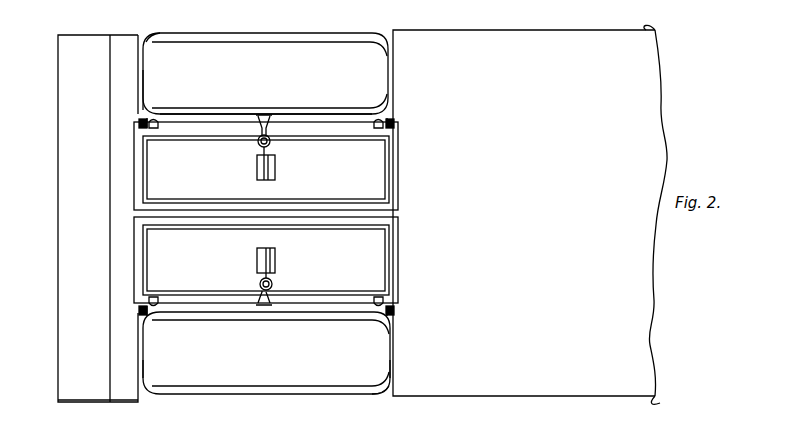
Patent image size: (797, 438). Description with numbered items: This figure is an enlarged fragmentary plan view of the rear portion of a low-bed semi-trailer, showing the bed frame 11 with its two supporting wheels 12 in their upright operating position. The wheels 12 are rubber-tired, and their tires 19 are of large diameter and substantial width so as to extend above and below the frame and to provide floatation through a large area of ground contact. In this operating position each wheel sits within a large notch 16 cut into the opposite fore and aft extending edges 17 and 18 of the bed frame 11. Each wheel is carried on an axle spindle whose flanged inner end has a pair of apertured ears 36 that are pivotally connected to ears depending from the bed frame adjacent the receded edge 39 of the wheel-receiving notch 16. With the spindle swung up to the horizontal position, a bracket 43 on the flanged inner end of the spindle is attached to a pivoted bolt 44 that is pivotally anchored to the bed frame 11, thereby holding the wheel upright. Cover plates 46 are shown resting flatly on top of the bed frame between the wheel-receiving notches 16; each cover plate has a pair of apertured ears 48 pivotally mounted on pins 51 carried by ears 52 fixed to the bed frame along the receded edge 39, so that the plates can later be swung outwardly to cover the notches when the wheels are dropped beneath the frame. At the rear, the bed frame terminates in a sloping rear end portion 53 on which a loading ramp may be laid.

The bed frame 11 is at (592, 174).
The wheels 12 is at (388, 84).
The notches 16 is at (143, 95).
The fore and aft extending edge 17 is at (646, 30).
The fore and aft extending edge 18 is at (660, 403).
The tires 19 is at (182, 37).
The apertured ears 36 is at (235, 122).
The receded edge 39 is at (192, 122).
The brackets 43 is at (258, 143).
The pivoted bolts 44 is at (276, 166).
The cover plates 46 is at (378, 160).
The apertured ears 48 is at (152, 128).
The pins 51 is at (150, 118).
The ears 52 is at (139, 122).
The sloping rear end portion 53 is at (53, 265).